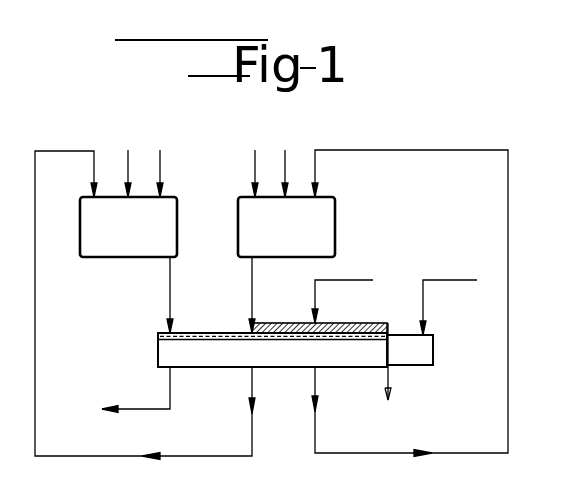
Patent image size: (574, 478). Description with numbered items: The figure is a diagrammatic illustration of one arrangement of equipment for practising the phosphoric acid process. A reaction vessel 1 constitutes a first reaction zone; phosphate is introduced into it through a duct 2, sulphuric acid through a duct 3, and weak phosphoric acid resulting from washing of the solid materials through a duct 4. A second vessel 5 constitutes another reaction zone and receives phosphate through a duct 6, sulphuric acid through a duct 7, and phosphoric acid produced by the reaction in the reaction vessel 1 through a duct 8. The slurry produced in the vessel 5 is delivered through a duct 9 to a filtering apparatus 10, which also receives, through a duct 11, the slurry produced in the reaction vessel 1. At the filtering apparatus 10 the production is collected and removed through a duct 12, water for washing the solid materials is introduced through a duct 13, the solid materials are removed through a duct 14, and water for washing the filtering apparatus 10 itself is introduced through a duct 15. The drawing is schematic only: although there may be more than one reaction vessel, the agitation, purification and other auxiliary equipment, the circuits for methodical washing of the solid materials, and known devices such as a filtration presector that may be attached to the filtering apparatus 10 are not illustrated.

The reaction vessel 1 is at (333, 238).
The duct 2 is at (255, 160).
The duct 3 is at (285, 160).
The duct 4 is at (315, 150).
The vessel 5 is at (122, 248).
The duct 6 is at (160, 160).
The duct 7 is at (128, 160).
The duct 8 is at (65, 151).
The duct 9 is at (170, 298).
The filtering apparatus 10 is at (158, 357).
The duct 11 is at (252, 298).
The duct 12 is at (172, 382).
The duct 13 is at (316, 296).
The duct 14 is at (392, 378).
The duct 15 is at (424, 296).